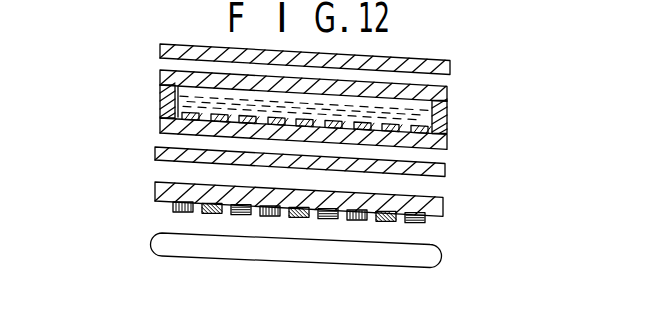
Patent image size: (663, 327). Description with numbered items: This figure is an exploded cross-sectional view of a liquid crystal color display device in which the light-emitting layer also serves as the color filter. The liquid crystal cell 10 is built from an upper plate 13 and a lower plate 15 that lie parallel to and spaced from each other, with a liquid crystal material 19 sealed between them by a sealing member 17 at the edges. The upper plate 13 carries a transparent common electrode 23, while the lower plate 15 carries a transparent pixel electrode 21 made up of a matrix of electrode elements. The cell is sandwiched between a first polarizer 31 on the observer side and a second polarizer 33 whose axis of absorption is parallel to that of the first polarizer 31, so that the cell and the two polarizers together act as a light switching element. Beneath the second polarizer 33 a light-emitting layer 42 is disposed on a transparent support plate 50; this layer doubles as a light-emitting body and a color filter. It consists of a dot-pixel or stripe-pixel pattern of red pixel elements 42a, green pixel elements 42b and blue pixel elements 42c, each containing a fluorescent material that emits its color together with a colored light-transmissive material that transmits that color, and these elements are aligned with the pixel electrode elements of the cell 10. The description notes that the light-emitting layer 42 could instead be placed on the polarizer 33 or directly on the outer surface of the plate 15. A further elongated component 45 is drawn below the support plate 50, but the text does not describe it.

The liquid crystal cell 10 is at (523, 48).
The upper plate 13 is at (448, 93).
The lower plate 15 is at (448, 142).
The sealing member 17 is at (160, 90).
The liquid crystal material 19 is at (450, 122).
The transparent pixel electrode 21 is at (162, 108).
The transparent common electrode 23 is at (162, 83).
The first polarizer 31 is at (450, 68).
The second polarizer 33 is at (447, 170).
The light-emitting layer 42 is at (78, 183).
The red pixel elements 42a is at (173, 212).
The green pixel elements 42b is at (202, 216).
The blue pixel elements 42c is at (233, 218).
The light guide / lamp 45 is at (443, 258).
The transparent support plate 50 is at (445, 210).